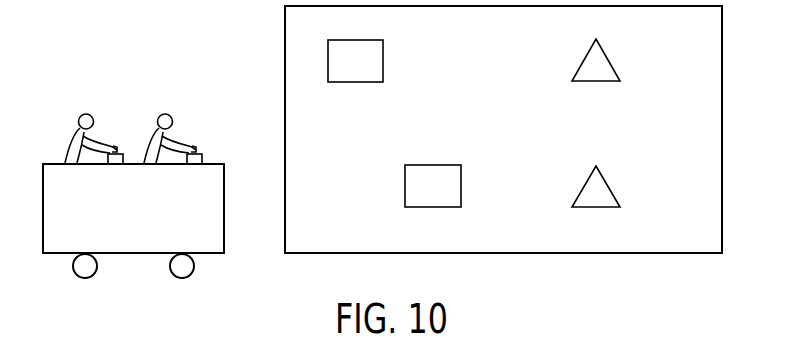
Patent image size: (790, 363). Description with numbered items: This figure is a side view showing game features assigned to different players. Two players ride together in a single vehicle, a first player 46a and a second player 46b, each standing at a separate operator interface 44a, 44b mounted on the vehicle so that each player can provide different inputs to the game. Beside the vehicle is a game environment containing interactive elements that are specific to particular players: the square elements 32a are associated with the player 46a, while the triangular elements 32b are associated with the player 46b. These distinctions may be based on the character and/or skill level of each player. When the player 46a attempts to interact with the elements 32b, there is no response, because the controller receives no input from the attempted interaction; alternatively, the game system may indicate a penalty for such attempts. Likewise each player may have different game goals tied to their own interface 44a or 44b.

The elements 32a is at (383, 62).
The elements 32b is at (608, 58).
The operator interface 44a is at (123, 154).
The operator interface 44b is at (202, 154).
The player 46a is at (82, 115).
The player 46b is at (166, 119).